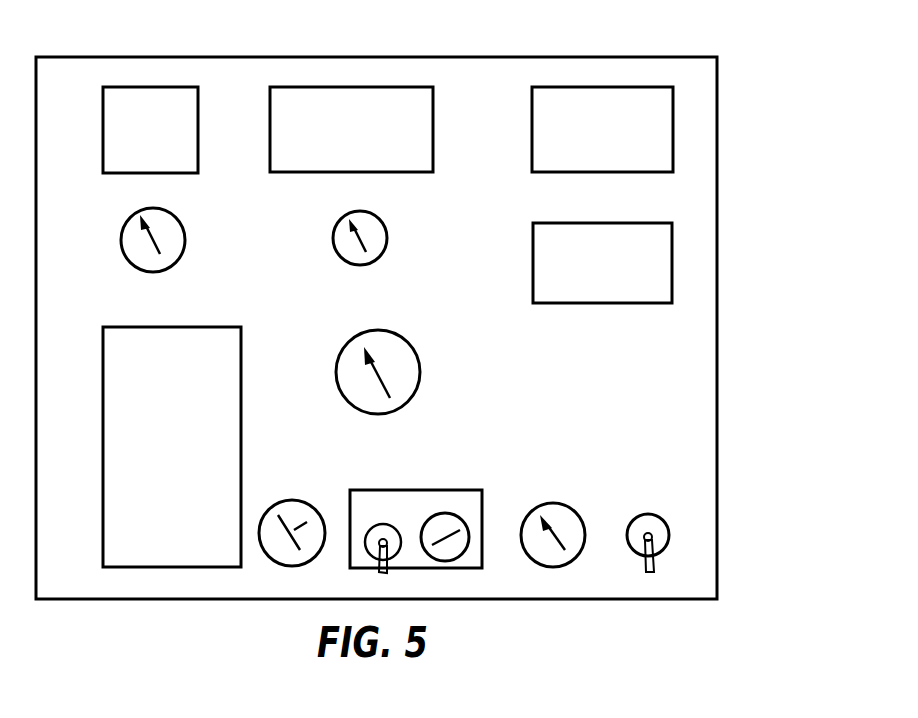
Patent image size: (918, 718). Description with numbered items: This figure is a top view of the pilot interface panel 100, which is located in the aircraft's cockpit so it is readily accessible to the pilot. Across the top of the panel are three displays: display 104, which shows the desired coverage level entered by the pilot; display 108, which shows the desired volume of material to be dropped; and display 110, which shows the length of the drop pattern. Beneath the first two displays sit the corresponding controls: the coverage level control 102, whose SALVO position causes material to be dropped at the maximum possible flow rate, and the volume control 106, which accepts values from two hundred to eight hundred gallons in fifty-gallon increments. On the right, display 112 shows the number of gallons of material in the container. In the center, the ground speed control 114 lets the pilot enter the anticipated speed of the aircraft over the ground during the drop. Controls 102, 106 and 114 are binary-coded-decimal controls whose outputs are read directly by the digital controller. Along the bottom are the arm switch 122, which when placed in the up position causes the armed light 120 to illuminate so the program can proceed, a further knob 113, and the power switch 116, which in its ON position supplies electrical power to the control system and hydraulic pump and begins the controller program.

The pilot interface panel 100 is at (731, 357).
The coverage level control 102 is at (185, 243).
The coverage level display 104 is at (180, 87).
The volume control 106 is at (388, 242).
The volume display 108 is at (363, 87).
The drop pattern length display 110 is at (622, 87).
The container gallons display 112 is at (672, 272).
The adjustment knob 113 is at (570, 505).
The ground speed control 114 is at (418, 358).
The power switch 116 is at (668, 540).
The armed light 120 is at (467, 528).
The arm switch 122 is at (366, 537).